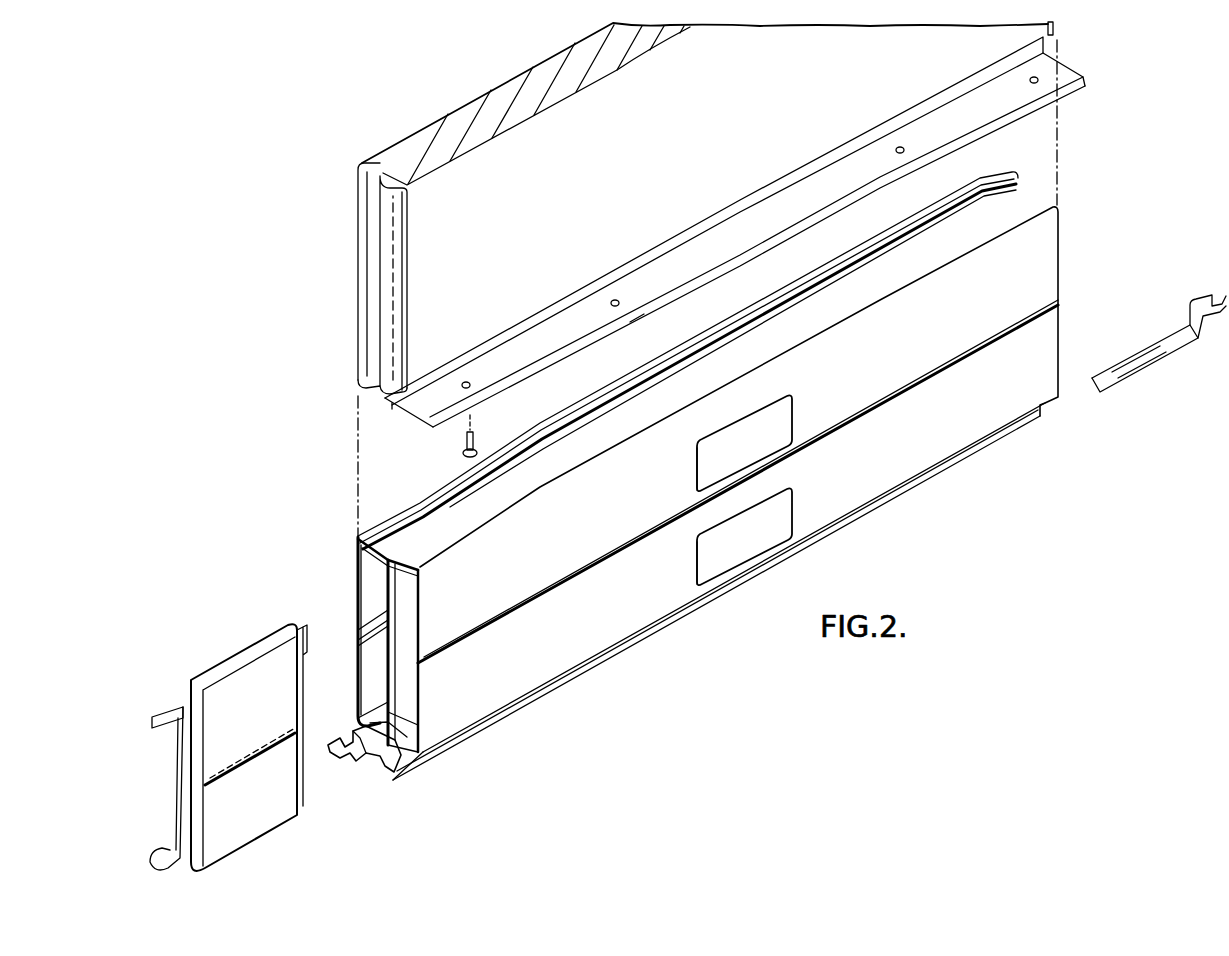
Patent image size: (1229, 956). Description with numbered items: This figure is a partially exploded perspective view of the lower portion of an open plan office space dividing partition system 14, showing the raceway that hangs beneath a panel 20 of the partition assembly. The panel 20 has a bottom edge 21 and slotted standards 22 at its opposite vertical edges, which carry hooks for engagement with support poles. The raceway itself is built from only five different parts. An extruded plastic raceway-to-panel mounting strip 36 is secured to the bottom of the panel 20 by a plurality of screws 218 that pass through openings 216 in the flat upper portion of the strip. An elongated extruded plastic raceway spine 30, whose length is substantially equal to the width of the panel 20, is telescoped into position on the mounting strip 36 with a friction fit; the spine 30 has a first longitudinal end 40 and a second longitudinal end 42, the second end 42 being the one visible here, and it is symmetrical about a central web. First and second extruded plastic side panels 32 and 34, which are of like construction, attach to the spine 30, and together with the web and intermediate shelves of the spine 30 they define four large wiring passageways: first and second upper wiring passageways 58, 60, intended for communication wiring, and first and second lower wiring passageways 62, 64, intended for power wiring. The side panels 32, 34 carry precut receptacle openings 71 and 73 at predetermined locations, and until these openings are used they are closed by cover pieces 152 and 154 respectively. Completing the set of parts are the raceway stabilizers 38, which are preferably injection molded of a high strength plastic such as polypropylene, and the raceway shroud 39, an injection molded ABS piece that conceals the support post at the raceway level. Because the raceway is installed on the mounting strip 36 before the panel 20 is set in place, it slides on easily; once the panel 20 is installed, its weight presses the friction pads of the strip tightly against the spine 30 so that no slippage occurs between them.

The open plan office space dividing partition system 14 is at (987, 502).
The panel 20 is at (486, 118).
The bottom edge 21 is at (557, 305).
The slotted standards 22 is at (358, 190).
The raceway spine 30 is at (402, 694).
The first side panel 32 is at (357, 546).
The second side panel 34 is at (560, 652).
The raceway-to-panel mounting strip 36 is at (636, 320).
The raceway stabilizers 38 is at (352, 758).
The raceway shrouds 39 is at (262, 640).
The first longitudinal end 40 is at (394, 552).
The second longitudinal end 42 is at (1010, 192).
The first upper wiring passageway 58 is at (376, 585).
The second upper wiring passageway 60 is at (402, 590).
The first lower wiring passageway 62 is at (376, 676).
The second lower wiring passageway 64 is at (402, 708).
The receptacle opening 71 is at (698, 572).
The receptacle opening 73 is at (698, 468).
The cover piece 152 is at (778, 512).
The cover piece 154 is at (778, 418).
The openings 216 is at (466, 383).
The screws 218 is at (474, 452).